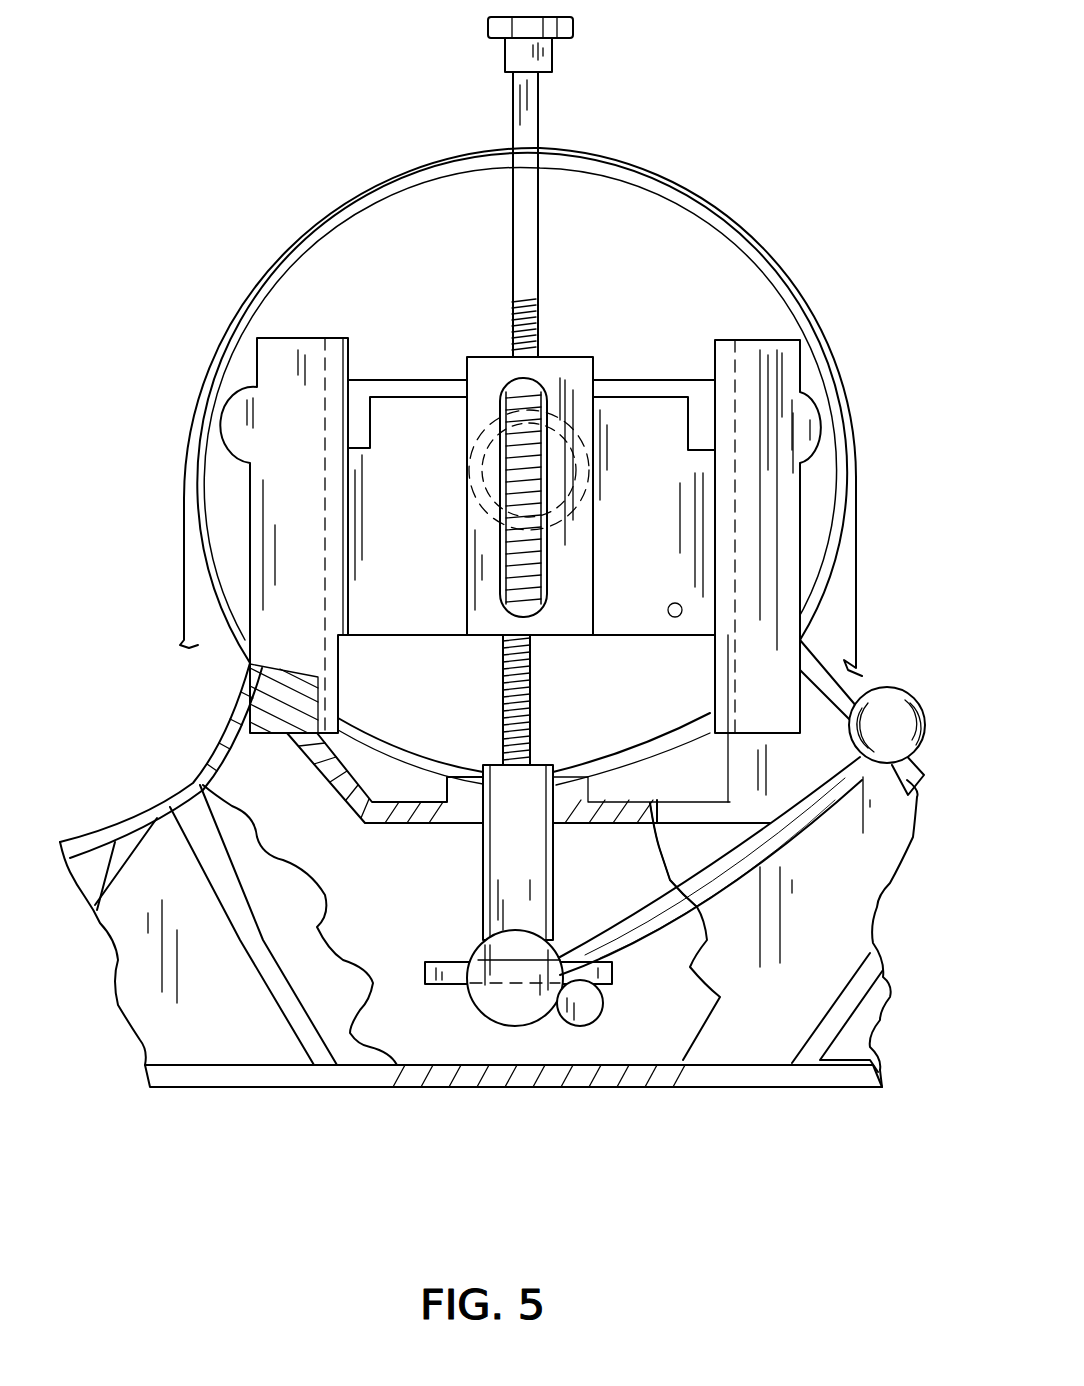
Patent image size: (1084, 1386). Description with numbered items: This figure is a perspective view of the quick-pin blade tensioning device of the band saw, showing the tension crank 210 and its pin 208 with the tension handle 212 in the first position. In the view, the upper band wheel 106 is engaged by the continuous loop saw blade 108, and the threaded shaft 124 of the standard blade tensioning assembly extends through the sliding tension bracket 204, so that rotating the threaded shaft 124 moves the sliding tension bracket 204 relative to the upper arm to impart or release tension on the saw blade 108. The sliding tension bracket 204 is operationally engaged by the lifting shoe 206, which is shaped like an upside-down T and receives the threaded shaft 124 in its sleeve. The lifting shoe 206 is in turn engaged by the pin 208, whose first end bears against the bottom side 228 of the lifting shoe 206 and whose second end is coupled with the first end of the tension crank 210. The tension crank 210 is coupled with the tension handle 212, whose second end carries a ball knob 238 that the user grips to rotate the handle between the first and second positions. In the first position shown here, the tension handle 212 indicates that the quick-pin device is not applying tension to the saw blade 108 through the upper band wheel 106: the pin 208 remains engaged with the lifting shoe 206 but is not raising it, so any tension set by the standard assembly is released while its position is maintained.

The upper band wheel 106 is at (705, 215).
The saw blade 108 is at (181, 592).
The threaded shaft 124 is at (530, 108).
The sliding tension bracket 204 is at (677, 477).
The lifting shoe 206 is at (607, 1017).
The pin 208 is at (573, 1035).
The tension crank 210 is at (517, 1005).
The tension handle 212 is at (681, 902).
The bottom side 228 is at (628, 978).
The ball knob 238 is at (887, 713).